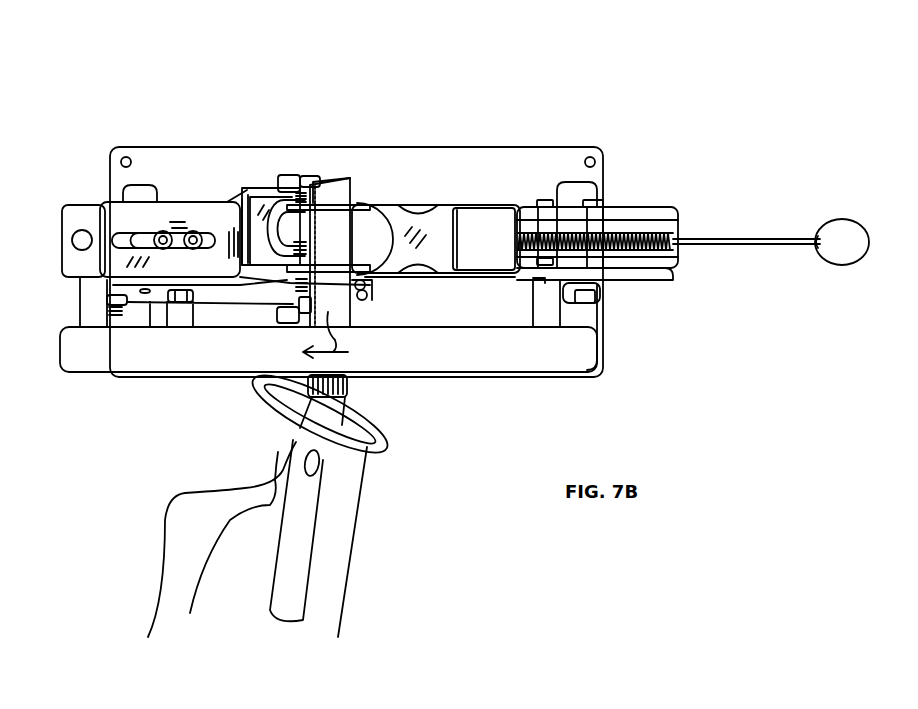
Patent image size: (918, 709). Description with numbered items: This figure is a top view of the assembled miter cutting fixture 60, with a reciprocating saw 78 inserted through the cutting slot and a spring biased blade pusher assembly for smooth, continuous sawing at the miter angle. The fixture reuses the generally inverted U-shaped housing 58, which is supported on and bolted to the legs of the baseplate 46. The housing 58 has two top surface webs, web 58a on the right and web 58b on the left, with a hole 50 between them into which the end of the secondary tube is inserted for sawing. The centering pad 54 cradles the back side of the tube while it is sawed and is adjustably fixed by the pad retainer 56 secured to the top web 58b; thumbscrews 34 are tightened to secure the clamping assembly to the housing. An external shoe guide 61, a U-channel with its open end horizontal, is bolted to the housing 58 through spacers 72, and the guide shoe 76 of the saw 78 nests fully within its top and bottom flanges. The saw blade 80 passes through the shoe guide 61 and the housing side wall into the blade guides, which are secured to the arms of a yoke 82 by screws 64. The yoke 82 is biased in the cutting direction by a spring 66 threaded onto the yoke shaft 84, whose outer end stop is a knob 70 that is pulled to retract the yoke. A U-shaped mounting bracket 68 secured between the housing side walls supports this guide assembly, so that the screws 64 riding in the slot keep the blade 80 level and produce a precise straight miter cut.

The miter cutting fixture 60 is at (100, 55).
The baseplate 46 is at (447, 195).
The shoe guide 61 is at (443, 360).
The spacers 72 is at (93, 308).
The top web 58b is at (82, 218).
The pad retainer 56 is at (188, 217).
The centering pad 54 is at (275, 205).
The thumbscrews 34 is at (288, 185).
The saw blade 80 is at (345, 176).
The hole 50 is at (377, 247).
The top web 58a is at (445, 235).
The housing 58 is at (443, 277).
The yoke 82 is at (480, 205).
The mounting bracket 68 is at (617, 205).
The spring 66 is at (647, 210).
The yoke shaft 84 is at (730, 240).
The knob 70 is at (847, 237).
The screws 64 is at (355, 290).
The guide shoe 76 is at (347, 392).
The reciprocating saw 78 is at (340, 512).